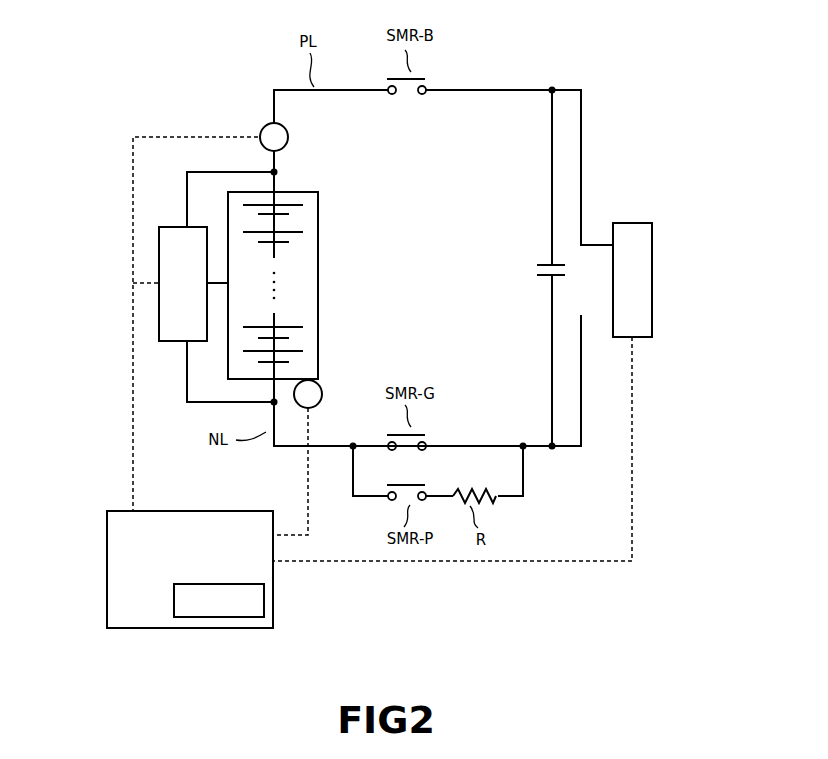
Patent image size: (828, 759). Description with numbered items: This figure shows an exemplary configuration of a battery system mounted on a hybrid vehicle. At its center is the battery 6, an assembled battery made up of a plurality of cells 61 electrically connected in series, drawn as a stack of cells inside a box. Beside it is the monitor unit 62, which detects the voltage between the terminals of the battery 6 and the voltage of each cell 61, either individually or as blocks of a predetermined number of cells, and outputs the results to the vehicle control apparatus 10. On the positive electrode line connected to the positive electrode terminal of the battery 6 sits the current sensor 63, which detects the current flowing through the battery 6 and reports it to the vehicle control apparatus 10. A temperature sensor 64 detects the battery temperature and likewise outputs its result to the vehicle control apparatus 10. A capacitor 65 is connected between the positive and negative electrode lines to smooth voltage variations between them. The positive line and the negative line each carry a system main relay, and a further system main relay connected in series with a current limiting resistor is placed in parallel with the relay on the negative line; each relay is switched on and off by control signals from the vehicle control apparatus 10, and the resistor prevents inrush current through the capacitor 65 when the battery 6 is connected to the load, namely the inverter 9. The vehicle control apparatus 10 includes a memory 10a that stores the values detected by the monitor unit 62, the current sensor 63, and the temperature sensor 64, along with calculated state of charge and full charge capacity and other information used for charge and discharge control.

The battery 6 is at (295, 285).
The cell 61 is at (302, 209).
The monitor unit 62 is at (171, 226).
The current sensor 63 is at (262, 130).
The temperature sensor 64 is at (316, 404).
The capacitor 65 is at (534, 268).
The inverter 9 is at (634, 222).
The vehicle control apparatus 10 is at (161, 587).
The memory 10a is at (248, 617).